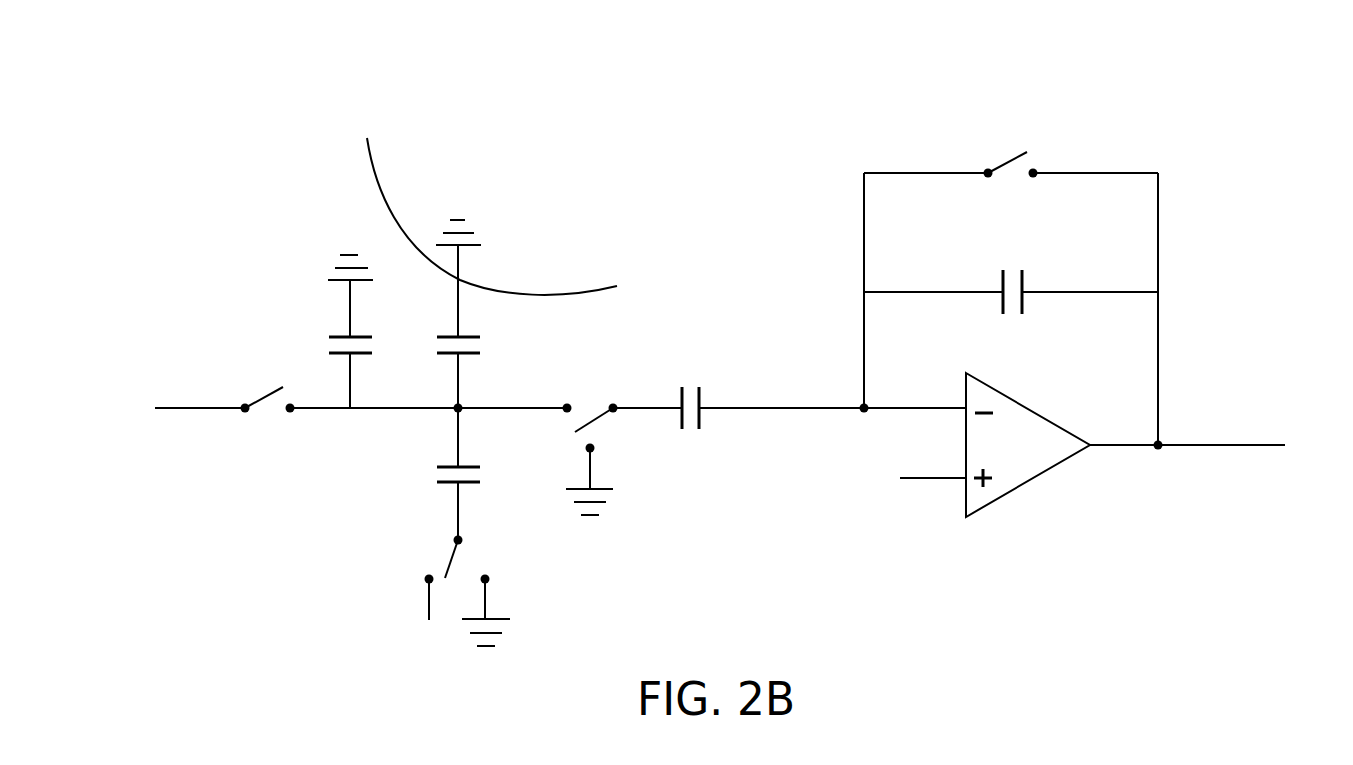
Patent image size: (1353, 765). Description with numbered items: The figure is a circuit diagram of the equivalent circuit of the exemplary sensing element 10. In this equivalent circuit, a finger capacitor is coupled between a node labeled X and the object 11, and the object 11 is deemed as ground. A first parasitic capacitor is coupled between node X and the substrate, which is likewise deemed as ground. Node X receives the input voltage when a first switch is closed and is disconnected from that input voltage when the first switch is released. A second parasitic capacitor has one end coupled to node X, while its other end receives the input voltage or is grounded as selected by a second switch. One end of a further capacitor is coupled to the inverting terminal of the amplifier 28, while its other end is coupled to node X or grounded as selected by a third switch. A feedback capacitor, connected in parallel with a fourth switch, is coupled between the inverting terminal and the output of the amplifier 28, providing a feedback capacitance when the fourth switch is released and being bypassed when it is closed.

The sensing element 10 is at (713, 353).
The object 11 is at (378, 188).
The amplifier 28 is at (1036, 458).